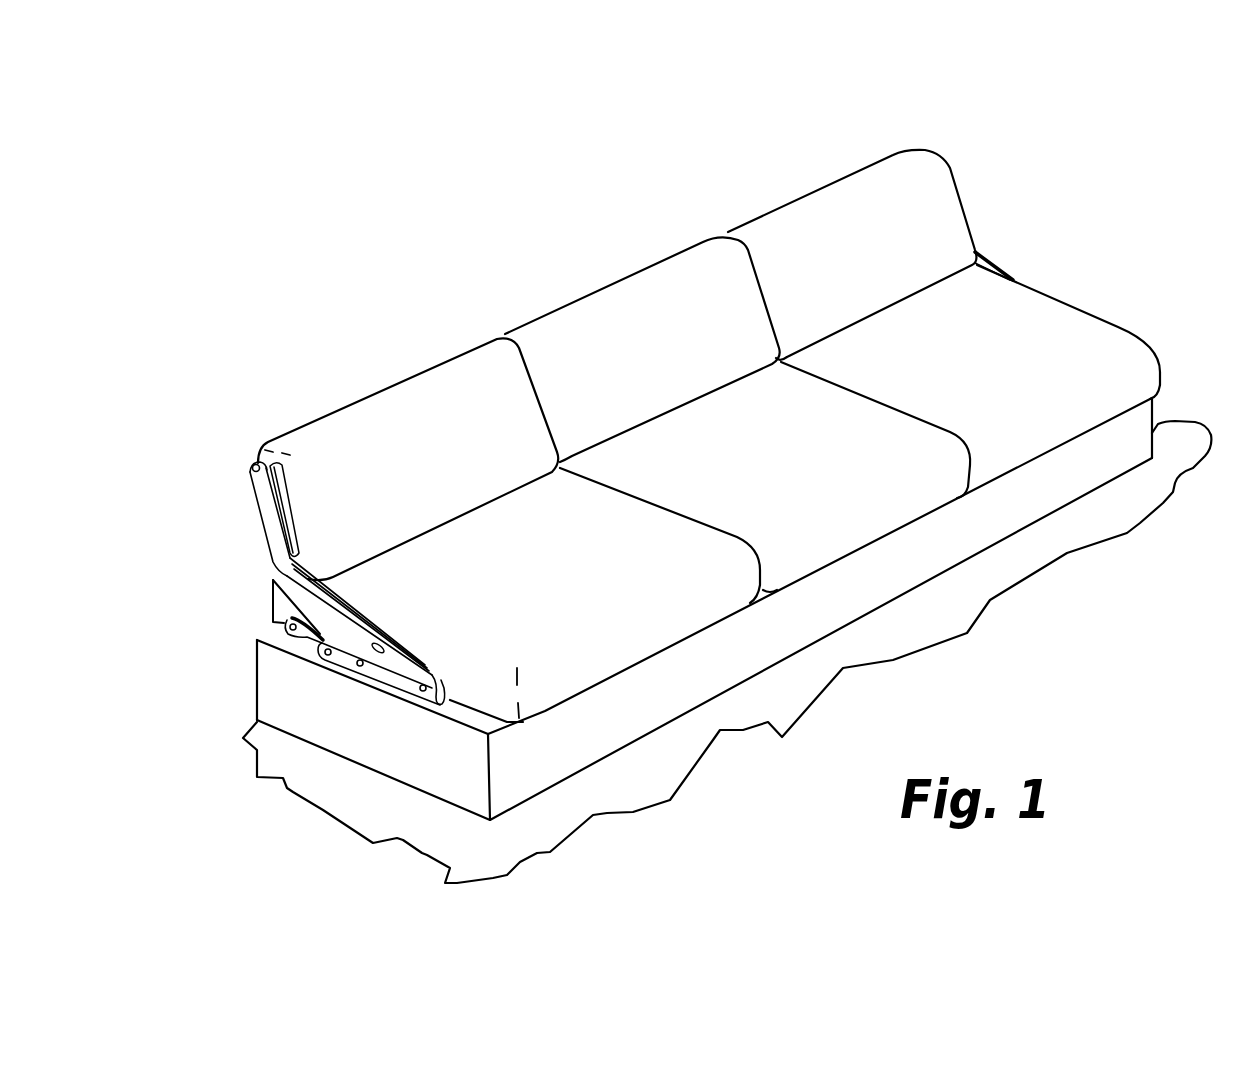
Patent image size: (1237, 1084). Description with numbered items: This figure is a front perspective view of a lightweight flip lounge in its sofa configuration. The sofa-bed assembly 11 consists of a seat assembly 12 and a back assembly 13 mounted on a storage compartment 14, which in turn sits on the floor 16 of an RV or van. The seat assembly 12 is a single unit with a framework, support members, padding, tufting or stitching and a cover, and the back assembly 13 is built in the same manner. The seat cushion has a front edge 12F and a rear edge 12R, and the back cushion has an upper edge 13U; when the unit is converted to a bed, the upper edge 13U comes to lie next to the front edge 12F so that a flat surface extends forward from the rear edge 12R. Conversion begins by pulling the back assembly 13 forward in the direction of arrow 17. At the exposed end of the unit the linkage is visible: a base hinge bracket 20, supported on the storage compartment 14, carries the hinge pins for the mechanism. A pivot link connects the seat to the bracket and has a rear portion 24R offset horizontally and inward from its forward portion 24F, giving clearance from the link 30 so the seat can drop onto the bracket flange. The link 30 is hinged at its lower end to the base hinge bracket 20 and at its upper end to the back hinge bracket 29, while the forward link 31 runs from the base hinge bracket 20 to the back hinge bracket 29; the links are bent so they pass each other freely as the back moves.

The sofa-bed assembly 11 is at (1126, 285).
The seat assembly 12 is at (1106, 332).
The front edge of the seat cushion 12F is at (1143, 368).
The rear edge of the seat cushion 12R is at (273, 609).
The back assembly 13 is at (933, 205).
The upper edge of the back cushion 13U is at (595, 333).
The storage compartment 14 is at (1120, 435).
The floor 16 is at (1074, 527).
The arrow 17 is at (1055, 153).
The base hinge bracket 20 is at (403, 683).
The forward portion of the pivot link 24F is at (322, 647).
The rear portion of the pivot link 24R is at (290, 636).
The back hinge bracket 29 is at (287, 518).
The link 30 is at (272, 537).
The forward link 31 is at (987, 253).